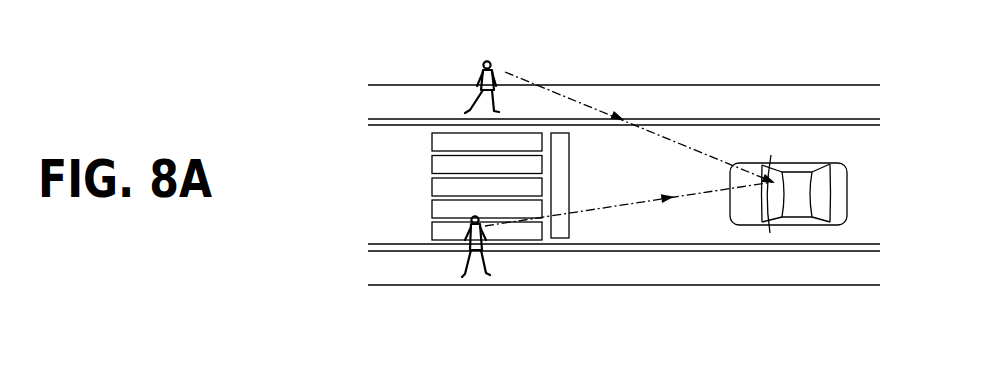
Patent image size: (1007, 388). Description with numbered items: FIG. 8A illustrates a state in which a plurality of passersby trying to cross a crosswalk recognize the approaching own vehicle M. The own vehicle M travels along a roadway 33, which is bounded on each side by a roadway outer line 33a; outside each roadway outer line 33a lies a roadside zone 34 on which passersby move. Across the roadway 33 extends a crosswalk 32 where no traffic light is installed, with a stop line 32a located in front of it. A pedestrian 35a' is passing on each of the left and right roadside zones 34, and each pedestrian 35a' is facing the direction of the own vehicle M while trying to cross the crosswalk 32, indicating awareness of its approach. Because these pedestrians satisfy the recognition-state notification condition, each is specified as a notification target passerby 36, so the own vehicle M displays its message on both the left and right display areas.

The crosswalk 32 is at (432, 167).
The stop line 32a is at (570, 176).
The roadway 33 is at (415, 225).
The roadway outer line 33a is at (860, 125).
The roadside zone 34 is at (793, 92).
The pedestrian 35a' is at (441, 200).
The notification target passerby 36 is at (442, 213).
The own vehicle M is at (847, 183).